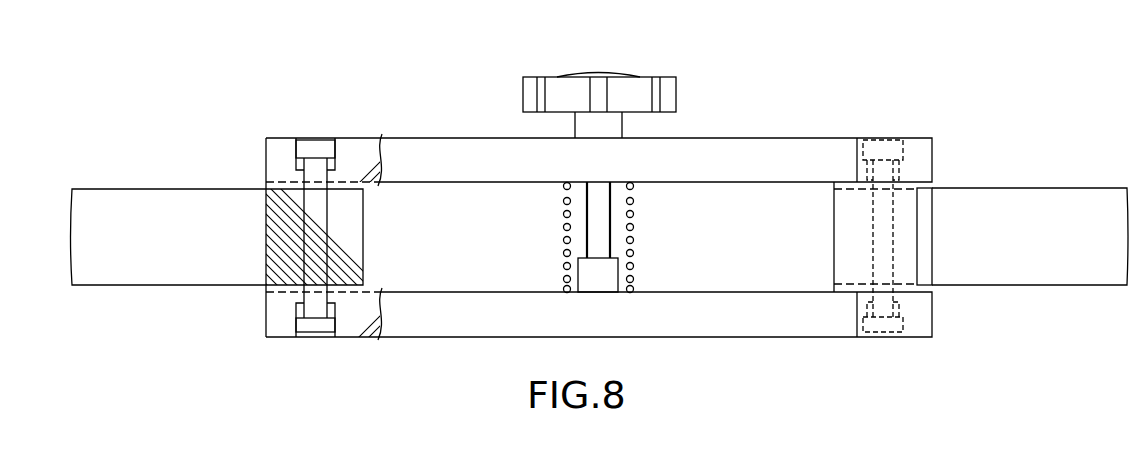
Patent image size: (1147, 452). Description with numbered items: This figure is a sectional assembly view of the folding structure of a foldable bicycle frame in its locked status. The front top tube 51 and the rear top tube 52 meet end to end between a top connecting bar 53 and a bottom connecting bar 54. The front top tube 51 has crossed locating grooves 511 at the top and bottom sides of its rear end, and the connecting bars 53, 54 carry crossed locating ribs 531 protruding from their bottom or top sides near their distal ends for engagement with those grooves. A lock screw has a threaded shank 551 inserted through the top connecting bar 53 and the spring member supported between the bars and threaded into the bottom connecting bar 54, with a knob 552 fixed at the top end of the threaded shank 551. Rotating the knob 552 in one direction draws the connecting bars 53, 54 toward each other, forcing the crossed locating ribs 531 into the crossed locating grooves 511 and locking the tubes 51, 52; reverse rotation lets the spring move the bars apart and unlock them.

The front top tube 51 is at (165, 198).
The rear top tube 52 is at (1047, 197).
The top connecting bar 53 is at (745, 157).
The bottom connecting bar 54 is at (785, 322).
The crossed locating grooves 511 is at (265, 172).
The crossed locating ribs 531 is at (341, 259).
The threaded shank 551 is at (608, 233).
The knob 552 is at (642, 87).